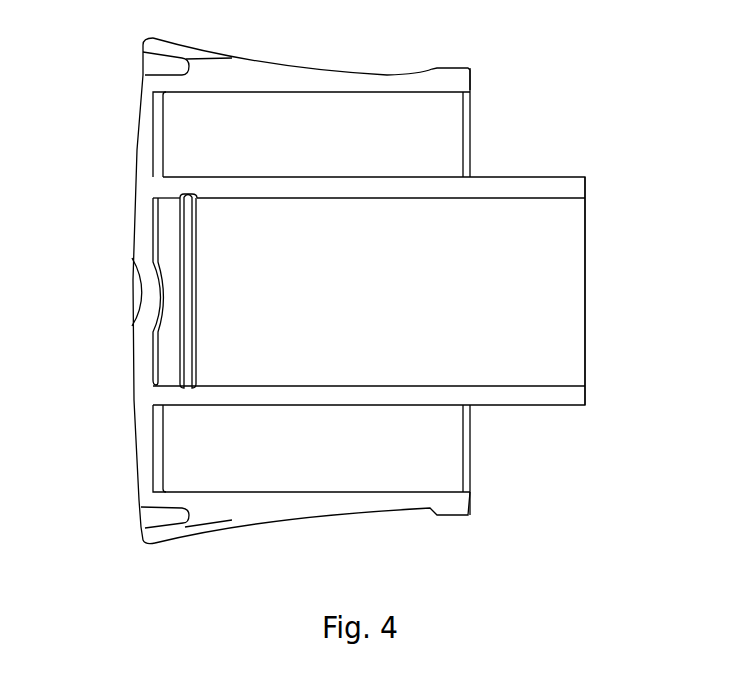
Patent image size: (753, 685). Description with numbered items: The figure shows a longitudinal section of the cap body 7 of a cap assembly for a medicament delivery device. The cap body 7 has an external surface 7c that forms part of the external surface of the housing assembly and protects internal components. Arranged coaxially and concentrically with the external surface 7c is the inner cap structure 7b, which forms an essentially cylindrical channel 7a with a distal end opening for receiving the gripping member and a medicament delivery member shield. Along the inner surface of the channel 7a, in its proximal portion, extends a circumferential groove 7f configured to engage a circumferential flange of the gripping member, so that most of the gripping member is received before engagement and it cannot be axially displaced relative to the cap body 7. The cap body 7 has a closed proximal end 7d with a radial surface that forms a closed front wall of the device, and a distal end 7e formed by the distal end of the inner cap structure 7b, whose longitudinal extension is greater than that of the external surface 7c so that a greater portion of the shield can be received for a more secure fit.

The cap body 7 is at (278, 38).
The channel 7a is at (516, 178).
The inner cap structure 7b is at (552, 285).
The external surface 7c is at (388, 72).
The proximal end 7d is at (132, 183).
The distal end 7e is at (588, 183).
The circumferential groove 7f is at (183, 358).